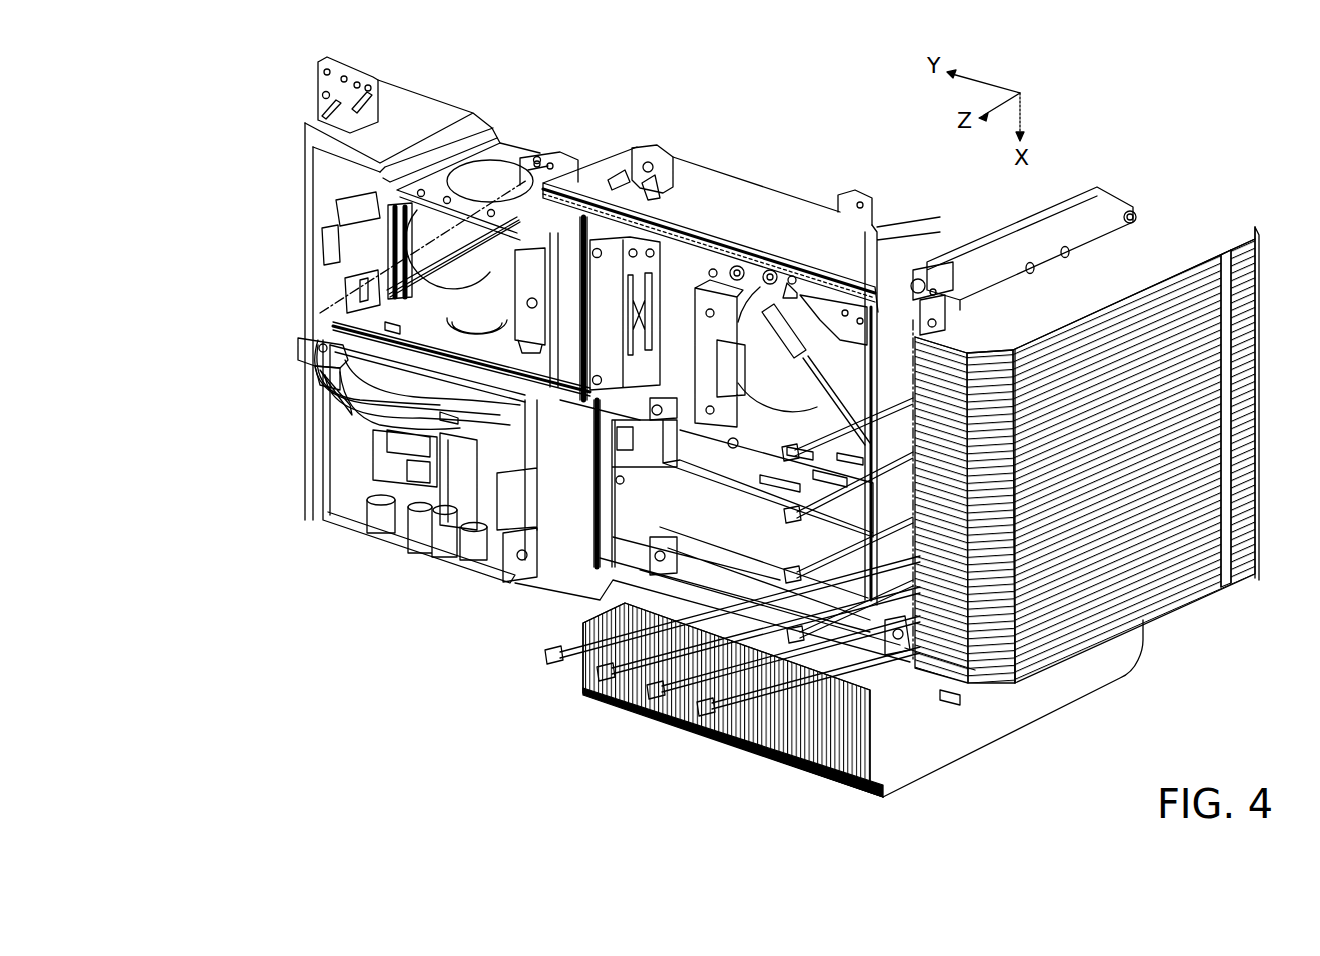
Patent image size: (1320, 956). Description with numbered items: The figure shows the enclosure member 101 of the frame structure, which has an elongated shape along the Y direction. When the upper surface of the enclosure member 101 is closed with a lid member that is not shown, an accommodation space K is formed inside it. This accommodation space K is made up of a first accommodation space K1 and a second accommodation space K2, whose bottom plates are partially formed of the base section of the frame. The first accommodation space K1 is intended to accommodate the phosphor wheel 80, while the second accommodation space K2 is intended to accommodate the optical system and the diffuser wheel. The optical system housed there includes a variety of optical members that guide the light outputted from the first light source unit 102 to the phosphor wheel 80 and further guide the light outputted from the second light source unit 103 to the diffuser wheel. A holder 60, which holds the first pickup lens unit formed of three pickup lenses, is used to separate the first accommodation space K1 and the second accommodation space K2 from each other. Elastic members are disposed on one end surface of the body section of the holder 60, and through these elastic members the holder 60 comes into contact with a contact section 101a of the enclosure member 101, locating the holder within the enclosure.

The enclosure member 101 is at (733, 198).
The contact section 101a is at (395, 330).
The accommodation space K is at (237, 365).
The first accommodation space K1 is at (305, 378).
The second accommodation space K2 is at (300, 316).
The holder 60 is at (330, 392).
The phosphor wheel 80 is at (345, 420).
The first light source unit 102 is at (657, 739).
The second light source unit 103 is at (1181, 206).